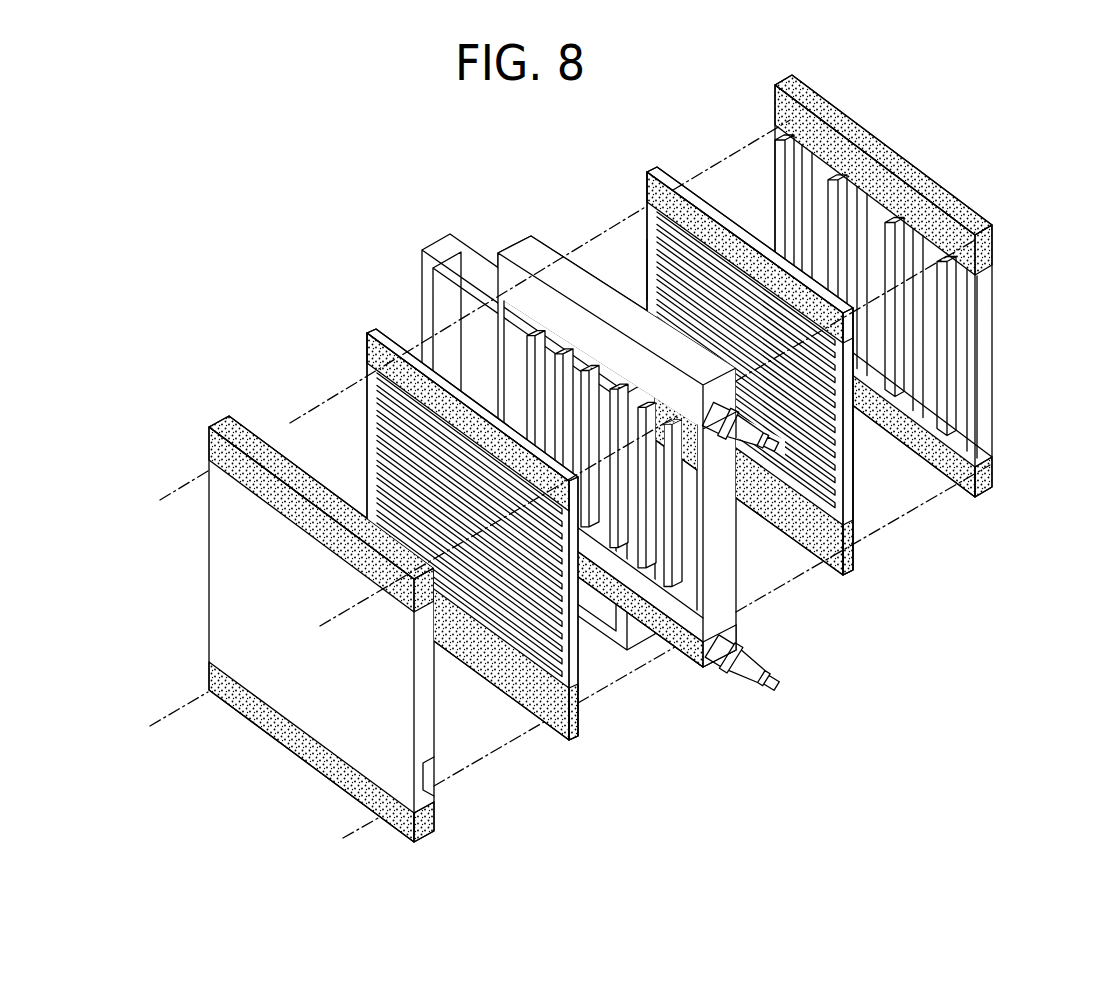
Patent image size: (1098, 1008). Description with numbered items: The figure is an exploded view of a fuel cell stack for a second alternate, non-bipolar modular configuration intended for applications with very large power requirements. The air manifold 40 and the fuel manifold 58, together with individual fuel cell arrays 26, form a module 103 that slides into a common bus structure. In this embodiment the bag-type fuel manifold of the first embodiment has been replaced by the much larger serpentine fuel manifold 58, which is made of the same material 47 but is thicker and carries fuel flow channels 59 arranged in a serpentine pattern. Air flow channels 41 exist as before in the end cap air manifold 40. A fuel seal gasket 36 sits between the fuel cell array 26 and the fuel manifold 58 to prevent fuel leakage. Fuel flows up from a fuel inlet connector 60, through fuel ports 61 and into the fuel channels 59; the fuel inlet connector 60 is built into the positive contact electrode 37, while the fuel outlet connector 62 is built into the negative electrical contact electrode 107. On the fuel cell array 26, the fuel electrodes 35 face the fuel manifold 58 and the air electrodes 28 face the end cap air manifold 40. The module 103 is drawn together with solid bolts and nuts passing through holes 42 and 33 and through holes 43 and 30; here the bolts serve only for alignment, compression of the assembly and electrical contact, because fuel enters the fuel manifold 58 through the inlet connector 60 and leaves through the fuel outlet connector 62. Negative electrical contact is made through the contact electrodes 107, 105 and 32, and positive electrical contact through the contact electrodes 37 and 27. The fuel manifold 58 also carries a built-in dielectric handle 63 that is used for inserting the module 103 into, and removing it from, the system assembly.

The module 103 is at (305, 294).
The contact electrode 105 is at (232, 425).
The negative electrical contact electrode 107 is at (519, 252).
The fuel cell array 26 is at (590, 735).
The contact electrode 27 is at (540, 712).
The air electrodes 28 is at (381, 440).
The holes 30 is at (580, 707).
The contact electrode 32 is at (370, 333).
The holes 33 is at (368, 352).
The fuel electrodes 35 is at (648, 272).
The fuel seal gasket 36 is at (853, 502).
The positive contact electrode 37 is at (288, 748).
The air manifold 40 is at (441, 679).
The air flow channels 41 is at (430, 773).
The holes 42 is at (233, 466).
The holes 43 is at (400, 812).
The material 47 is at (554, 350).
The fuel manifold 58 is at (740, 568).
The fuel flow channels 59 is at (604, 584).
The fuel inlet connector 60 is at (768, 660).
The fuel ports 61 is at (650, 612).
The fuel outlet connector 62 is at (760, 447).
The dielectric handle 63 is at (440, 247).